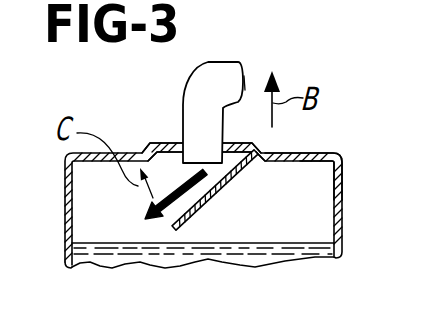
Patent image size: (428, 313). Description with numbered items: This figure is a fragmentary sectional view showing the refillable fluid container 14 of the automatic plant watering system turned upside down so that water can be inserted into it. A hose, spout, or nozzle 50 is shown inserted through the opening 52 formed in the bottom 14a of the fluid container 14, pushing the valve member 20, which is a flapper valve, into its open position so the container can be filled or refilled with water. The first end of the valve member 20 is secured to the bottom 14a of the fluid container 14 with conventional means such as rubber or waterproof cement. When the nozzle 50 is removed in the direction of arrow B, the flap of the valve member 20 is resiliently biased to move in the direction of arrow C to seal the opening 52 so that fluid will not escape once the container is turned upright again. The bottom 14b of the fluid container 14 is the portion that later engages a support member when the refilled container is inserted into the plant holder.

The fluid container 14 is at (65, 243).
The bottom of fluid container 14a is at (367, 188).
The bottom of container 14b is at (314, 151).
The valve member 20 is at (212, 191).
The nozzle 50 is at (223, 68).
The opening 52 is at (143, 87).